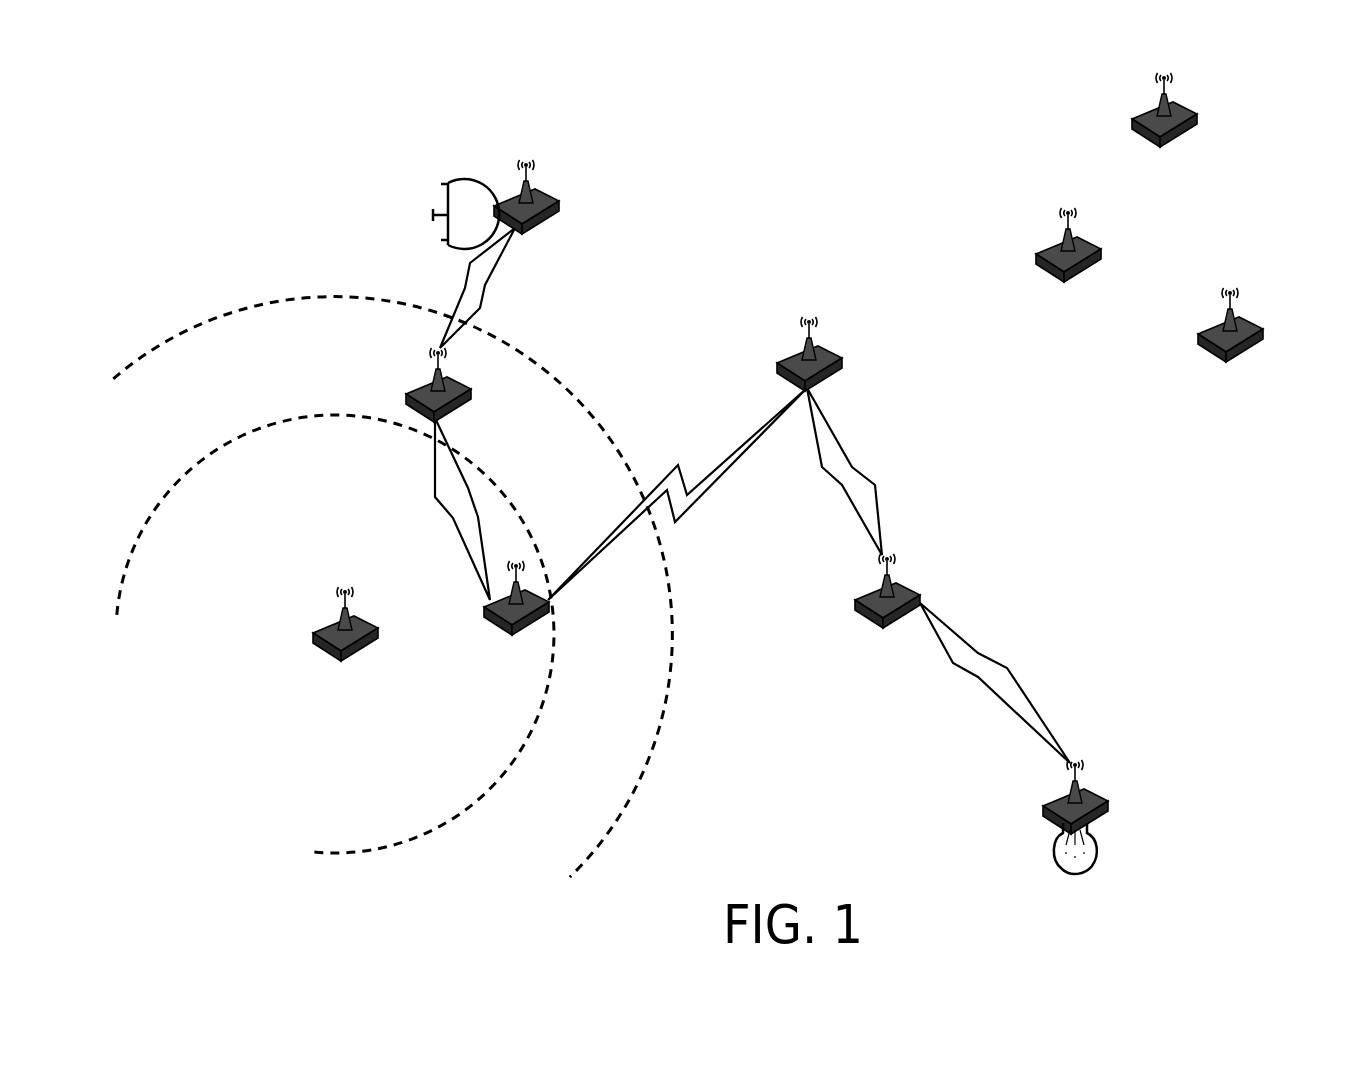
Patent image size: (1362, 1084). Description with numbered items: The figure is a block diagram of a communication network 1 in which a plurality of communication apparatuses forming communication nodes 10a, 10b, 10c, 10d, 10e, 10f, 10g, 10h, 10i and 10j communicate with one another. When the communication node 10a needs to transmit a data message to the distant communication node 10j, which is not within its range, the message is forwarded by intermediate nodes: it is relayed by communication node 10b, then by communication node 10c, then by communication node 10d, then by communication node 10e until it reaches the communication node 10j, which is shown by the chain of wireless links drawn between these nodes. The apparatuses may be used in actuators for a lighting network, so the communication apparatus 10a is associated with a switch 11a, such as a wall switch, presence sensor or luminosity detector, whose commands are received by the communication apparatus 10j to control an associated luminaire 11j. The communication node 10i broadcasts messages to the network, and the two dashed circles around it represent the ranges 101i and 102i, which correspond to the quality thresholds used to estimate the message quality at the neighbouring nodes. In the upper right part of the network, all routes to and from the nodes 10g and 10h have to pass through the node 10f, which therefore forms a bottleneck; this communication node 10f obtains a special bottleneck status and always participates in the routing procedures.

The communication network 1 is at (262, 173).
The communication node 10a is at (555, 186).
The communication node 10b is at (462, 379).
The communication node 10c is at (505, 623).
The communication node 10d is at (838, 346).
The communication node 10e is at (906, 588).
The communication node 10f is at (1088, 240).
The communication node 10g is at (1180, 103).
The communication node 10h is at (1253, 322).
The communication node 10i is at (380, 607).
The communication node 10j is at (1093, 790).
The switch 11a is at (448, 183).
The luminaire 11j is at (1097, 843).
The range 101i is at (525, 742).
The range 102i is at (658, 730).